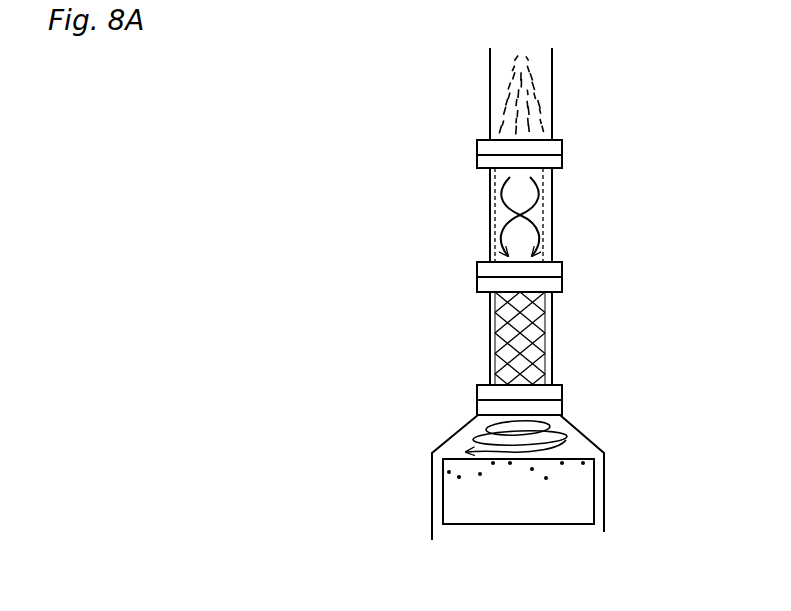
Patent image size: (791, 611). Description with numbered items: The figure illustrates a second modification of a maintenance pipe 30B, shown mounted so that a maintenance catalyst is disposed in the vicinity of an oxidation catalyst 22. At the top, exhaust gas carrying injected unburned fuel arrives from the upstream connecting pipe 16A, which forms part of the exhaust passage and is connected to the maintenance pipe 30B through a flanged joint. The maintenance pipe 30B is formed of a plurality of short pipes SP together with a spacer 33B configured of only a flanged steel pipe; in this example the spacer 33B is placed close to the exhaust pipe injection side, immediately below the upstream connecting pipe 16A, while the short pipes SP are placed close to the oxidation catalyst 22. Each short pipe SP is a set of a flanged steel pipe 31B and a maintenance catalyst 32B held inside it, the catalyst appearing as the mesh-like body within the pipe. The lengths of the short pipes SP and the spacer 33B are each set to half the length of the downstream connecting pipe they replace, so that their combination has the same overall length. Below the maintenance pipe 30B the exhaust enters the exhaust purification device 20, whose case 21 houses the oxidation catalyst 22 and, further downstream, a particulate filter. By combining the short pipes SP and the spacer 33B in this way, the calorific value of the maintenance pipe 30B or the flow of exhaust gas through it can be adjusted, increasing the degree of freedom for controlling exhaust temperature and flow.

The upstream connecting pipe 16A is at (488, 90).
The spacer 33B is at (488, 212).
The maintenance pipe 30B is at (470, 278).
The short pipe SP is at (383, 278).
The maintenance catalyst 32B is at (506, 328).
The flanged steel pipe 31B is at (488, 347).
The case 21 is at (585, 441).
The oxidation catalyst 22 is at (532, 510).
The exhaust purification device 20 is at (608, 484).